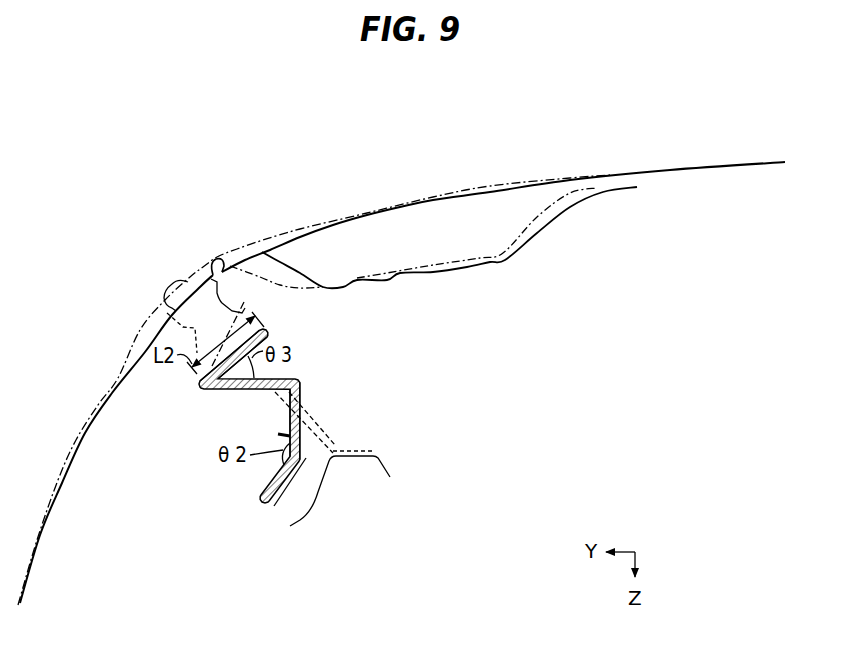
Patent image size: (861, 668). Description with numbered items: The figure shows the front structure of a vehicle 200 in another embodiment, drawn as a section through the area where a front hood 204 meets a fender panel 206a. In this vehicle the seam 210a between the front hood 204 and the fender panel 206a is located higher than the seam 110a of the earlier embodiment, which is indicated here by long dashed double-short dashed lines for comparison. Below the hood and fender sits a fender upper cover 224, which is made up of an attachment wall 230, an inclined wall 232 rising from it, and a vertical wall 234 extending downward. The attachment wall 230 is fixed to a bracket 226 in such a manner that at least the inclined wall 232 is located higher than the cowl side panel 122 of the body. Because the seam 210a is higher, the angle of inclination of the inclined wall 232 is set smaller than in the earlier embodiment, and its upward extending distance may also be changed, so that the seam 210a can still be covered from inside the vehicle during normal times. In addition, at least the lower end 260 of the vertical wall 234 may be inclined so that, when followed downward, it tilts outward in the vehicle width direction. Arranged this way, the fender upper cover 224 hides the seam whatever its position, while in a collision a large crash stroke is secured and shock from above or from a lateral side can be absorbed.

The vehicle 200 is at (489, 142).
The front hood 204 is at (262, 245).
The fender panel 206a is at (78, 444).
The seam 210a is at (215, 262).
The seam 110a is at (164, 288).
The attachment wall 230 is at (286, 374).
The inclined wall 232 is at (264, 338).
The vertical wall 234 is at (287, 410).
The bracket 226 is at (314, 436).
The cowl side panel 122 is at (378, 456).
The fender upper cover 224 is at (198, 456).
The lower end 260 is at (295, 488).